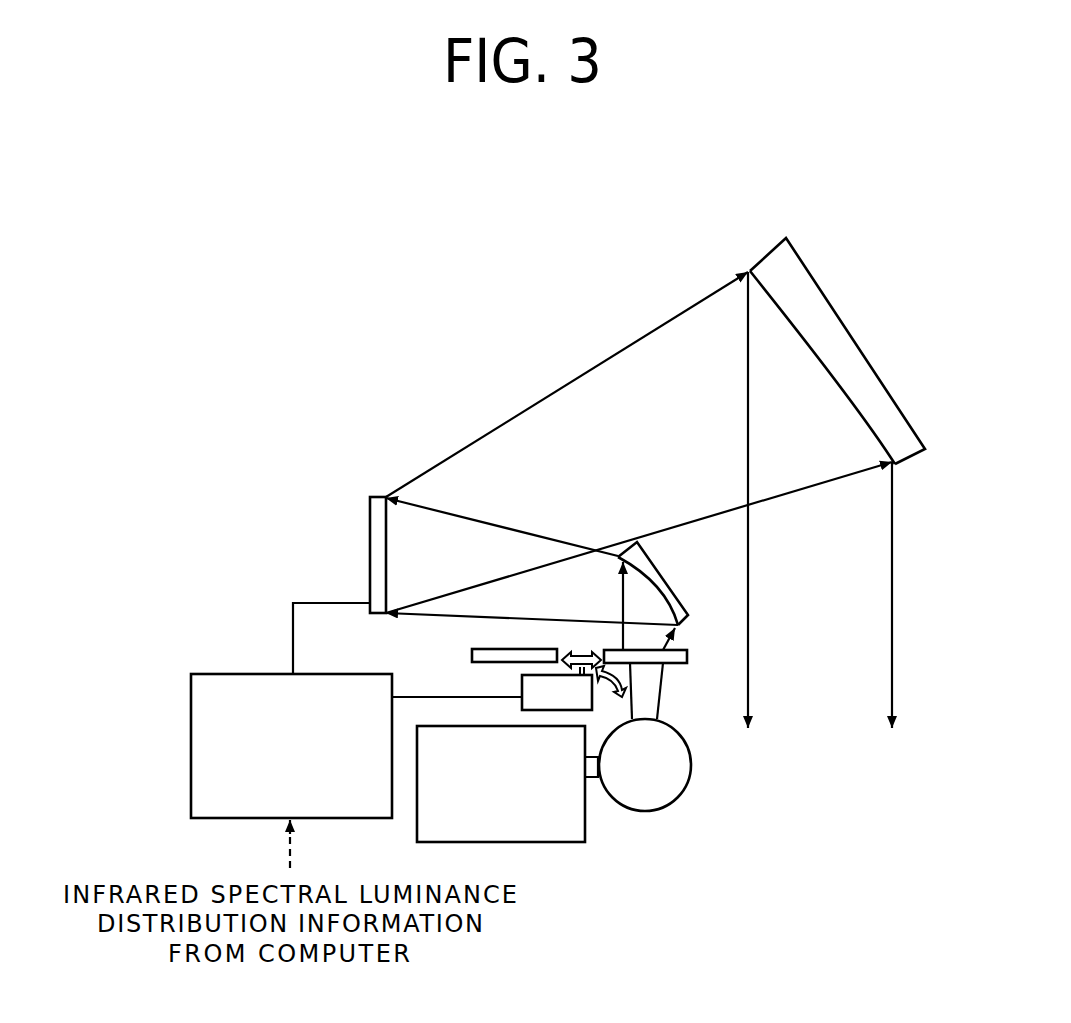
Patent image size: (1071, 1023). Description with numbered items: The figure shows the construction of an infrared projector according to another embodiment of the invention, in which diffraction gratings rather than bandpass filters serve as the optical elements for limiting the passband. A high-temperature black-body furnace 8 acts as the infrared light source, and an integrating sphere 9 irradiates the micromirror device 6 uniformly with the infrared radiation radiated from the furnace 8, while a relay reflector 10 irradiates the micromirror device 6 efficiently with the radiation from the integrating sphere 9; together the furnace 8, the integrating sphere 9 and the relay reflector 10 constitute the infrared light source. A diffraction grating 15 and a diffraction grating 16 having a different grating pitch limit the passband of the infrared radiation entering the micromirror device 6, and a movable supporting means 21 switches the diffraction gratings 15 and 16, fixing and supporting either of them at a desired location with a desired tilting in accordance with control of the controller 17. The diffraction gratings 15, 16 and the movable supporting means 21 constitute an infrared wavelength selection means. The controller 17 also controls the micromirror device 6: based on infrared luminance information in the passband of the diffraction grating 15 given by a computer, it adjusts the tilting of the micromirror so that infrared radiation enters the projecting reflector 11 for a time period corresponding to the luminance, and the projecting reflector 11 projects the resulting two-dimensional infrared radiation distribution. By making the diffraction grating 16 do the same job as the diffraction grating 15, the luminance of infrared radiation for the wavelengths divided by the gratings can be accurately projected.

The micromirror device 6 is at (377, 497).
The high-temperature black-body furnace 8 is at (557, 843).
The integrating sphere 9 is at (662, 812).
The relay reflector 10 is at (670, 579).
The projecting reflector 11 is at (858, 345).
The diffraction grating 15 is at (688, 649).
The diffraction grating 16 is at (472, 655).
The controller 17 is at (205, 674).
The movable supporting means 21 is at (522, 690).